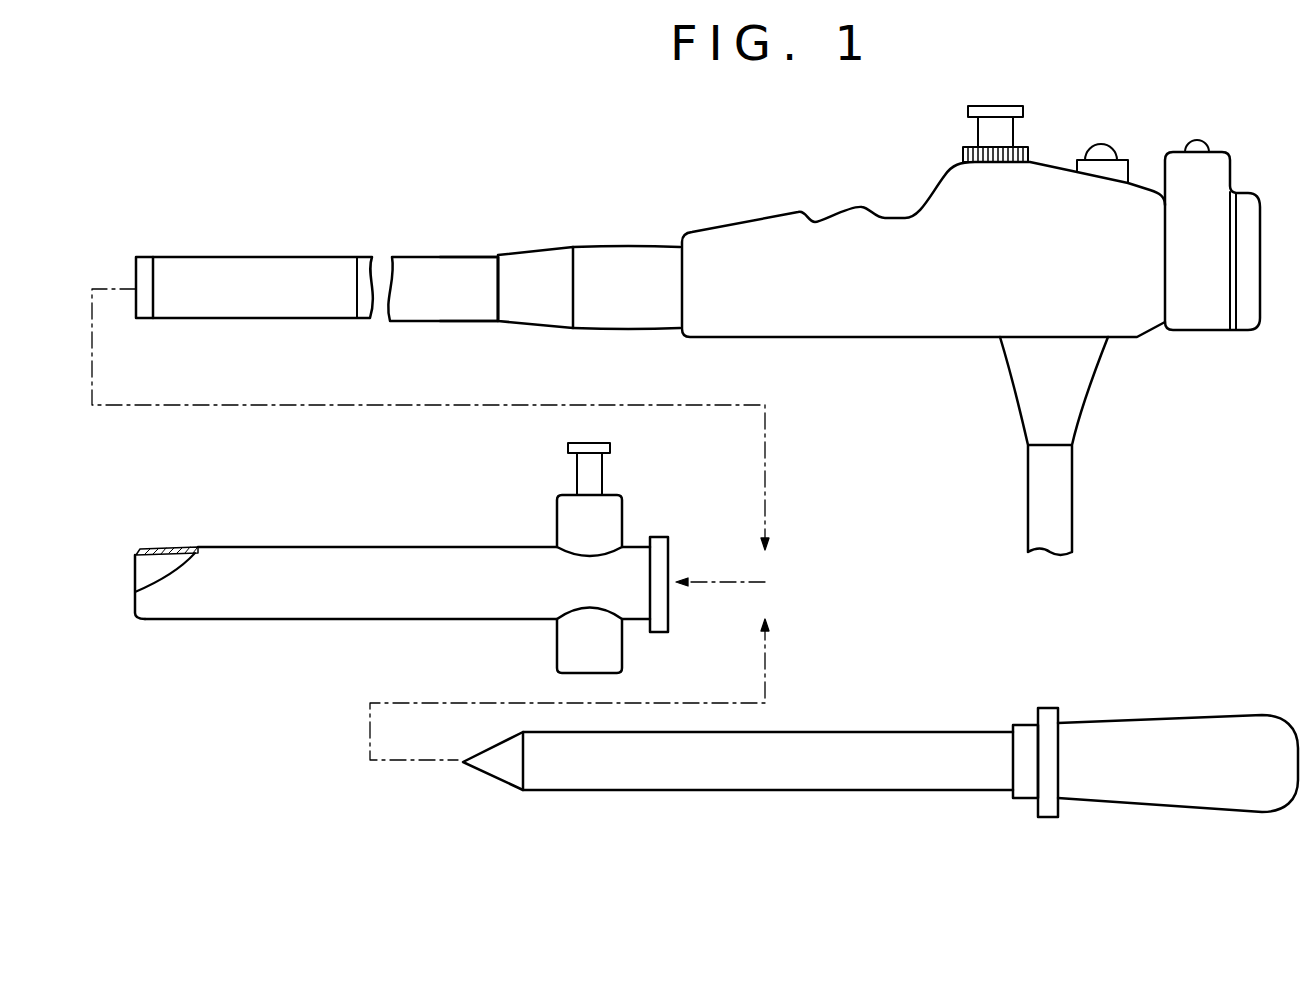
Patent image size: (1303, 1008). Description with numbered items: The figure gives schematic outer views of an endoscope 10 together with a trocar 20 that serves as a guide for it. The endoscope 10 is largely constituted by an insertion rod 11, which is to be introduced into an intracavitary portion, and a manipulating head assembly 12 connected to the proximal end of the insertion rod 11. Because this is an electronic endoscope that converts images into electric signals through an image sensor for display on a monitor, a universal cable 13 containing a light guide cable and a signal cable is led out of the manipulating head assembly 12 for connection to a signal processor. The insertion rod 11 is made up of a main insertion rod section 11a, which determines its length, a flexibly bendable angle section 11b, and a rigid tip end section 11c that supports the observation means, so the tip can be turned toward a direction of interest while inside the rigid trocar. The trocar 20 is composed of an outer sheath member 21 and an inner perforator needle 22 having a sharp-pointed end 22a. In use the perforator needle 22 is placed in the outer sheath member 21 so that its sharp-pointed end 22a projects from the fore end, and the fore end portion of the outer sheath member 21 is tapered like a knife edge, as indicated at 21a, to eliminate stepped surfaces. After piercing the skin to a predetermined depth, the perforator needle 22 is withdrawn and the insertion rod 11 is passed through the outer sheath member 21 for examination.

The endoscope 10 is at (648, 232).
The insertion rod 11 is at (426, 251).
The main insertion rod section 11a is at (470, 310).
The angle section 11b is at (318, 262).
The rigid tip end section 11c is at (141, 257).
The manipulating head assembly 12 is at (893, 327).
The universal cable 13 is at (1062, 488).
The trocar 20 is at (774, 790).
The outer sheath member 21 is at (292, 622).
The knife-edge tapered fore end portion 21a is at (157, 548).
The inner perforator needle 22 is at (892, 742).
The sharp-pointed end 22a is at (490, 776).